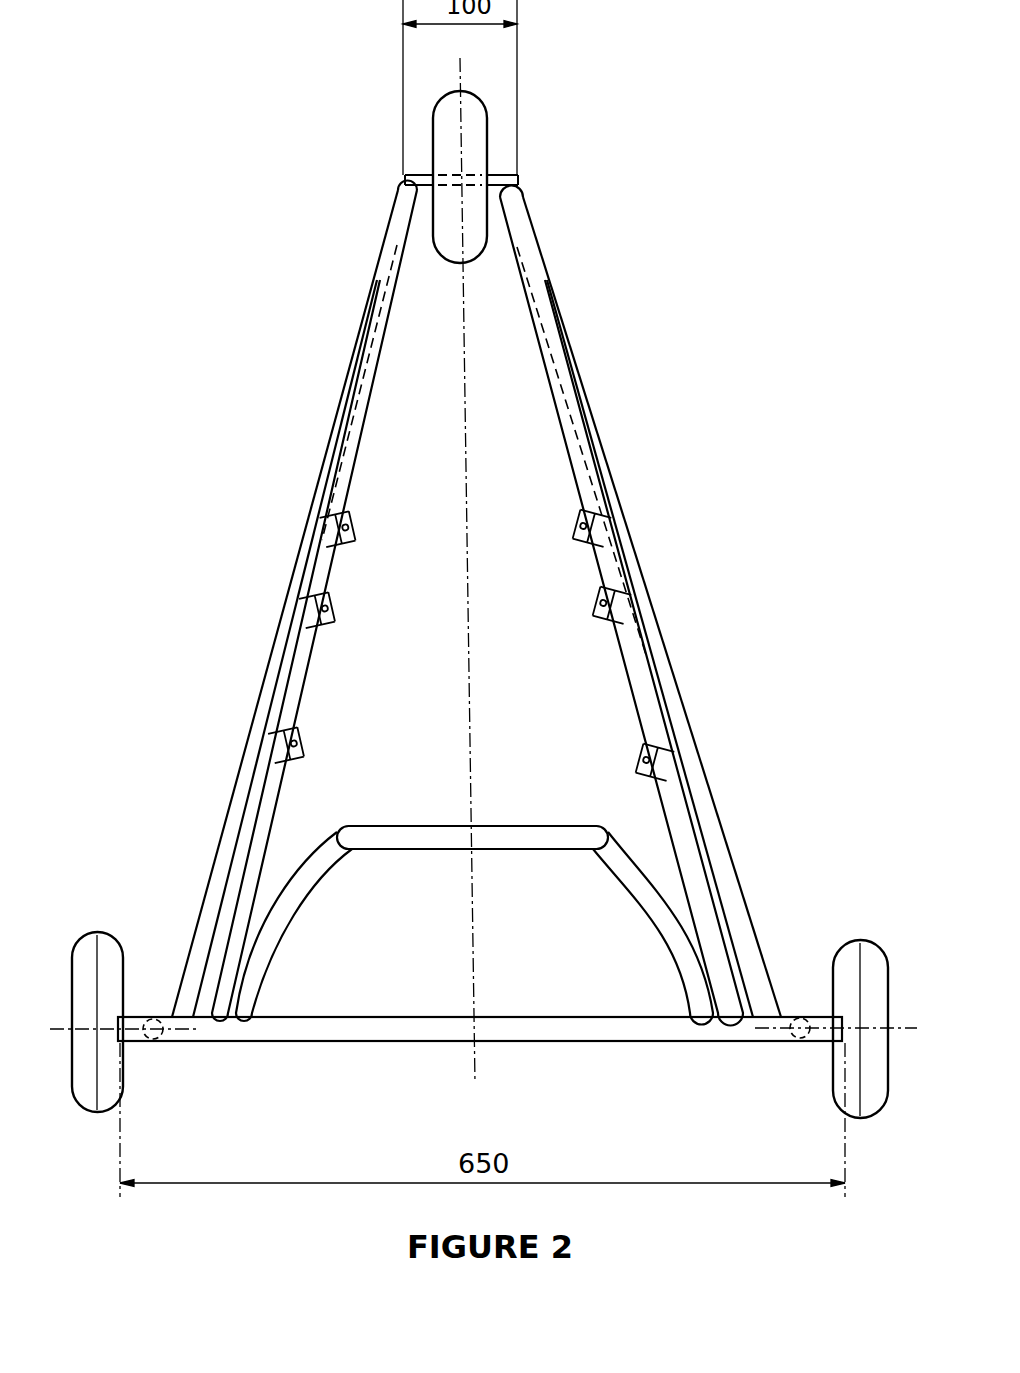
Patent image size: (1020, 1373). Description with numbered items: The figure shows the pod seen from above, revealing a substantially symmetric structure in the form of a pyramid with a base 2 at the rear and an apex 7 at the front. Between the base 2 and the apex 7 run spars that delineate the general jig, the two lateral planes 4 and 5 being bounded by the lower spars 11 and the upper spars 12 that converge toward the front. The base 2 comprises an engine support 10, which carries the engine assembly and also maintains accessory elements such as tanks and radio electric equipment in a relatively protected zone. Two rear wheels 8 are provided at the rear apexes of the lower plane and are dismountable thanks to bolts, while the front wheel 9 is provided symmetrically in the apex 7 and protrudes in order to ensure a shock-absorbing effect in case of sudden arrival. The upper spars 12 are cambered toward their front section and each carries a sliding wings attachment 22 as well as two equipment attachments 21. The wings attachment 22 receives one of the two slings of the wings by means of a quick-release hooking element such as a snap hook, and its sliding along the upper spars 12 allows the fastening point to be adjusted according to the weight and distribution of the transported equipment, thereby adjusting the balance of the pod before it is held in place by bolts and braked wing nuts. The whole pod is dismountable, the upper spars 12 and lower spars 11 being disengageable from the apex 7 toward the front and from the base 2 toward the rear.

The base 2 is at (382, 1068).
The lateral plane 4 is at (705, 603).
The lateral plane 5 is at (236, 597).
The apex 7 is at (503, 167).
The rear wheels 8 is at (84, 930).
The front wheel 9 is at (477, 127).
The engine support 10 is at (541, 840).
The lower spars 11 is at (244, 758).
The upper spars 12 is at (392, 252).
The equipment attachments 21 is at (333, 612).
The wings attachment 22 is at (303, 741).